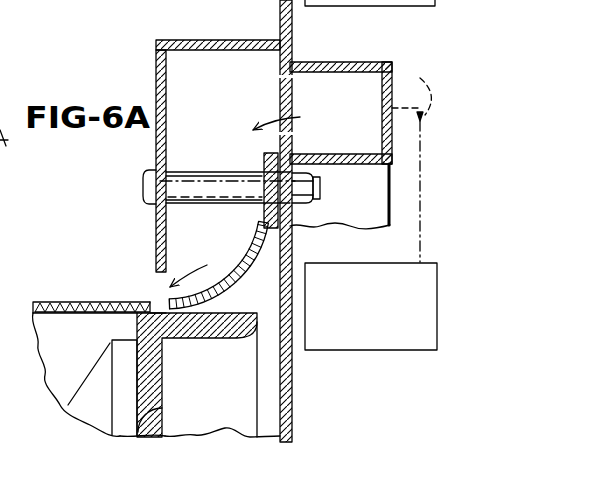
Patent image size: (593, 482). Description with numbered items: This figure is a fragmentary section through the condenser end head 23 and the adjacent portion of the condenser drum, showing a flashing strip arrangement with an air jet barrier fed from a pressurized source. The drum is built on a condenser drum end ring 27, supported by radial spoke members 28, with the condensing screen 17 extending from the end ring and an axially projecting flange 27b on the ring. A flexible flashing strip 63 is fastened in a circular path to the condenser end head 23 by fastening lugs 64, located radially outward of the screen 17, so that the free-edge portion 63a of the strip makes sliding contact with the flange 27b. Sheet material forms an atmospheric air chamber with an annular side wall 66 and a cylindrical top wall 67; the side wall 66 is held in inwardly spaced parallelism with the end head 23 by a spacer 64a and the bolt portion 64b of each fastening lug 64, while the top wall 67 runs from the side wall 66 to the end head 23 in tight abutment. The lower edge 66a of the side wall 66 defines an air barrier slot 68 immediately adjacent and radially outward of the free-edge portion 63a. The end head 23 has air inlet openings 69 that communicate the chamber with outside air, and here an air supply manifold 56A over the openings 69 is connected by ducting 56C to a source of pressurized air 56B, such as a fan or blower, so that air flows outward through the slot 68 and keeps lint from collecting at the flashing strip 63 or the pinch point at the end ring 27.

The condensing screen 17 is at (73, 302).
The condenser end head 23 is at (292, 33).
The condenser drum end ring 27 is at (165, 395).
The axially projecting flange 27b is at (190, 340).
The radial spoke members 28 is at (100, 363).
The air supply manifold 56A is at (366, 62).
The source of pressurized air 56B is at (395, 350).
The ducting 56C is at (411, 162).
The flashing strip 63 is at (270, 277).
The free-edge portion 63a is at (155, 300).
The fastening lugs 64 is at (322, 187).
The spacer 64a is at (224, 172).
The bolt portion 64b is at (143, 180).
The side wall 66 is at (156, 58).
The lower edge 66a is at (167, 268).
The top wall 67 is at (250, 40).
The air barrier slot 68 is at (157, 300).
The atmospheric air inlet openings 69 is at (280, 107).